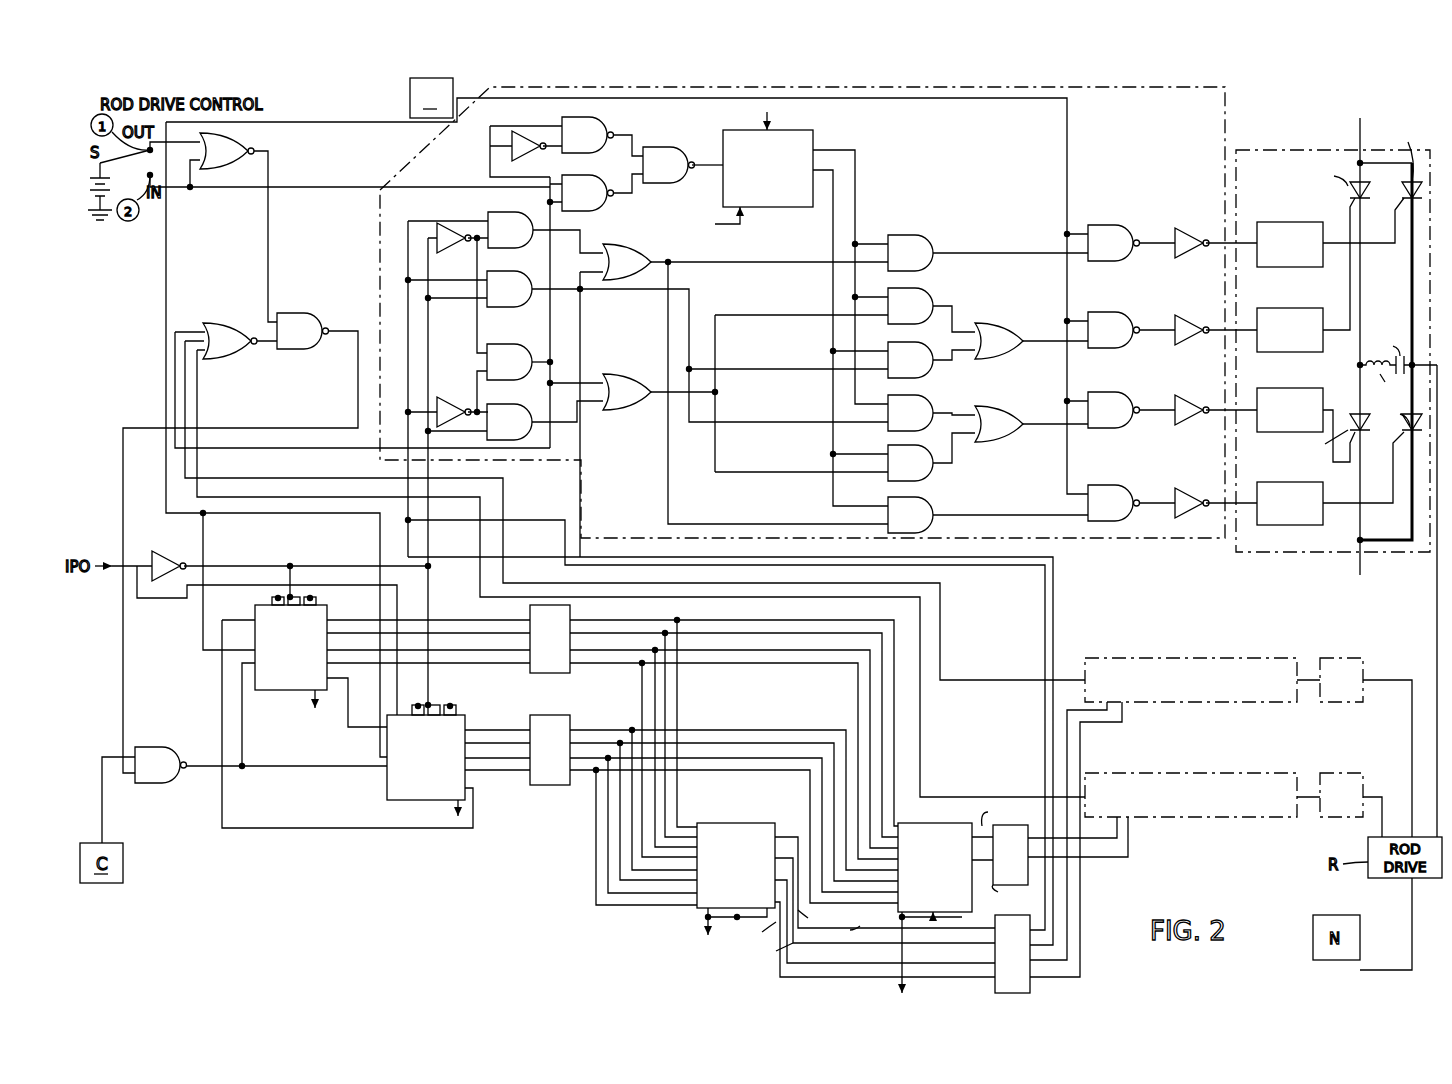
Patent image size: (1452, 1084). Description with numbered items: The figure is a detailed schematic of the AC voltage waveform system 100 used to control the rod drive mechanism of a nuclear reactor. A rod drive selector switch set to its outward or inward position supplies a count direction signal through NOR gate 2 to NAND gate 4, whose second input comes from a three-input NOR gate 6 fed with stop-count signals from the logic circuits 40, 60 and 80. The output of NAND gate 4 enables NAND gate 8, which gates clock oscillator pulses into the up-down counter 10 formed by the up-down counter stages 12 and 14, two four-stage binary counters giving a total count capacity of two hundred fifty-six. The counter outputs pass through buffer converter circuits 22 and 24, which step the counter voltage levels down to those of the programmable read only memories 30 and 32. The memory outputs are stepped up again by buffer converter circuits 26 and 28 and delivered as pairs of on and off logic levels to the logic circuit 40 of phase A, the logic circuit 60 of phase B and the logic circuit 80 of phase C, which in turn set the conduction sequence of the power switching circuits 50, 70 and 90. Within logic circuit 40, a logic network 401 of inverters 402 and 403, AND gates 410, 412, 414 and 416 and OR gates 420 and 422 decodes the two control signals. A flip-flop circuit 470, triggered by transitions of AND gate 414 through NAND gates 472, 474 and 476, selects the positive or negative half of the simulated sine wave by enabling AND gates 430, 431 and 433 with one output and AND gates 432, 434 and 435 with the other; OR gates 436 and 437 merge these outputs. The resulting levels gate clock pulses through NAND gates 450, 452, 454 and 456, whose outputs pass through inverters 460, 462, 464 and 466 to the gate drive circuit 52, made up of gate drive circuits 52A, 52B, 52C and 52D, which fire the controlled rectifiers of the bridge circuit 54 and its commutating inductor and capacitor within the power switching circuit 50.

The NOR gate 2 is at (257, 151).
The NAND gate 4 is at (316, 346).
The NOR gate 6 is at (238, 358).
The NAND gate 8 is at (158, 748).
The up-down counter 10 is at (318, 758).
The up-down counter stage 12 is at (266, 690).
The up-down counter stage 14 is at (385, 796).
The buffer converter circuit 22 is at (566, 673).
The buffer converter circuit 24 is at (553, 785).
The buffer converter circuit 26 is at (1016, 822).
The buffer converter circuit 28 is at (1032, 986).
The programmable read only memory 30 is at (732, 822).
The programmable read only memory 32 is at (932, 822).
The logic circuit 40 is at (1240, 104).
The power switching circuit 50 is at (1334, 150).
The gate drive circuit 52 is at (1272, 193).
The gate drive circuit 52A is at (1276, 222).
The gate drive circuit 52B is at (1276, 308).
The gate drive circuit 52C is at (1276, 388).
The gate drive circuit 52D is at (1303, 525).
The bridge circuit 54 is at (1392, 319).
The logic circuit 60 is at (1218, 658).
The power switching circuit 70 is at (1340, 658).
The logic circuit 80 is at (1241, 773).
The power switching circuit 90 is at (1340, 773).
The AC voltage waveform system 100 is at (225, 268).
The logic network 401 is at (466, 355).
The inverter 402 is at (440, 222).
The inverter 403 is at (463, 403).
The AND gate 410 is at (500, 220).
The AND gate 412 is at (515, 278).
The AND gate 414 is at (513, 350).
The AND gate 416 is at (515, 410).
The OR gate 420 is at (626, 256).
The OR gate 422 is at (618, 382).
The AND gate 430 is at (920, 243).
The AND gate 431 is at (918, 300).
The AND gate 432 is at (918, 372).
The AND gate 433 is at (918, 415).
The AND gate 434 is at (918, 475).
The AND gate 435 is at (918, 518).
The OR gate 436 is at (1000, 334).
The OR gate 437 is at (1004, 420).
The NAND gate 450 is at (1104, 234).
The NAND gate 452 is at (1108, 322).
The NAND gate 454 is at (1108, 402).
The NAND gate 456 is at (1108, 494).
The inverter 460 is at (1180, 238).
The inverter 462 is at (1180, 326).
The inverter 464 is at (1180, 406).
The inverter 466 is at (1180, 498).
The flip-flop circuit 470 is at (810, 150).
The NAND gate 472 is at (600, 200).
The NAND gate 474 is at (598, 133).
The NAND gate 476 is at (660, 147).